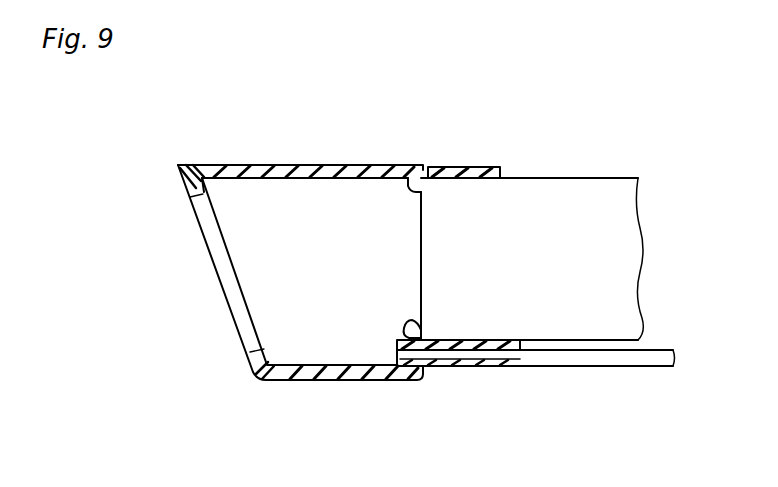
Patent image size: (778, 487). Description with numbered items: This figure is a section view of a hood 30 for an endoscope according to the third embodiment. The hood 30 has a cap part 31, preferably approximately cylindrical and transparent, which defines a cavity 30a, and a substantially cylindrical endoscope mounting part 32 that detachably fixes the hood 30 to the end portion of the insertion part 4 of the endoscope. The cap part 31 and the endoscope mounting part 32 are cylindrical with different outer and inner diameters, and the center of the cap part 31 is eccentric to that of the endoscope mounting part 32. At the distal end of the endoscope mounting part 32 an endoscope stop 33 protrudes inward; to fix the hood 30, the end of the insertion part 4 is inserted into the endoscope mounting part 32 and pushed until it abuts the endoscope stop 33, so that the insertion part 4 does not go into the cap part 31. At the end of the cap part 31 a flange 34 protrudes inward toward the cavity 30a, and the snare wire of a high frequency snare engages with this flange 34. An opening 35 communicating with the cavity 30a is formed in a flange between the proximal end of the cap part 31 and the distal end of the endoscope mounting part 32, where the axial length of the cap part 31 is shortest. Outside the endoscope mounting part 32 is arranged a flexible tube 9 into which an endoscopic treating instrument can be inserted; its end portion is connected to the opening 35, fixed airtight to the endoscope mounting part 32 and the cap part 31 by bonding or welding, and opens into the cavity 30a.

The hood 30 is at (256, 122).
The cavity 30a is at (318, 275).
The cap part 31 is at (327, 166).
The endoscope mounting part 32 is at (465, 167).
The endoscope stop 33 is at (408, 190).
The flange 34 is at (206, 189).
The opening 35 is at (404, 332).
The insertion part 4 is at (568, 193).
The flexible tube 9 is at (608, 362).